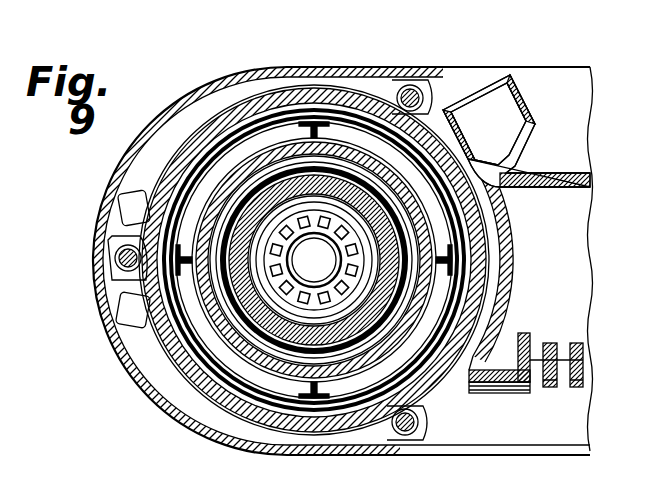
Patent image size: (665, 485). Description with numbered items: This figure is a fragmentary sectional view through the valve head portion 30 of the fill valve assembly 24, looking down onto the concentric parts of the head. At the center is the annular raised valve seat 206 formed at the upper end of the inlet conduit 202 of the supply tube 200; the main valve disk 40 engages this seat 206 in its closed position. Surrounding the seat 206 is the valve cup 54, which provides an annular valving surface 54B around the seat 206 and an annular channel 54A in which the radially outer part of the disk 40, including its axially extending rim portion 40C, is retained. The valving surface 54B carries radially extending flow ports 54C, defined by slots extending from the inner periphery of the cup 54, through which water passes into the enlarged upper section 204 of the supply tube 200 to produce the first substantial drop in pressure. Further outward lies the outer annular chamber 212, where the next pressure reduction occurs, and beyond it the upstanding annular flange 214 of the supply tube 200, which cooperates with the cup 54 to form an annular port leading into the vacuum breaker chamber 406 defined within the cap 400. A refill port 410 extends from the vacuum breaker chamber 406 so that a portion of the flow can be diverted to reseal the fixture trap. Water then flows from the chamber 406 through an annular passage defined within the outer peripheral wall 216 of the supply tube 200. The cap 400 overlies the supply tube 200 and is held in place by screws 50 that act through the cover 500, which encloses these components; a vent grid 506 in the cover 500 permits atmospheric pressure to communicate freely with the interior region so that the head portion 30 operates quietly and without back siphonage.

The fill valve assembly 24 is at (92, 421).
The valve head portion 30 is at (117, 446).
The main valve disk 40 is at (292, 172).
The rim portion 40C is at (340, 172).
The screws 50 is at (115, 258).
The valve cup 54 is at (405, 280).
The annular channel 54A is at (395, 262).
The annular valving surface 54B is at (385, 240).
The flow ports 54C is at (380, 218).
The supply tube 200 is at (214, 425).
The inlet conduit 202 is at (284, 452).
The enlarged upper section 204 is at (165, 205).
The valve seat 206 is at (314, 260).
The outer annular chamber 212 is at (127, 312).
The annular flange 214 is at (185, 222).
The outer peripheral wall 216 is at (175, 398).
The cap 400 is at (197, 130).
The vacuum breaker chamber 406 is at (165, 158).
The refill port 410 is at (508, 82).
The cover 500 is at (599, 90).
The vent grid 506 is at (563, 393).